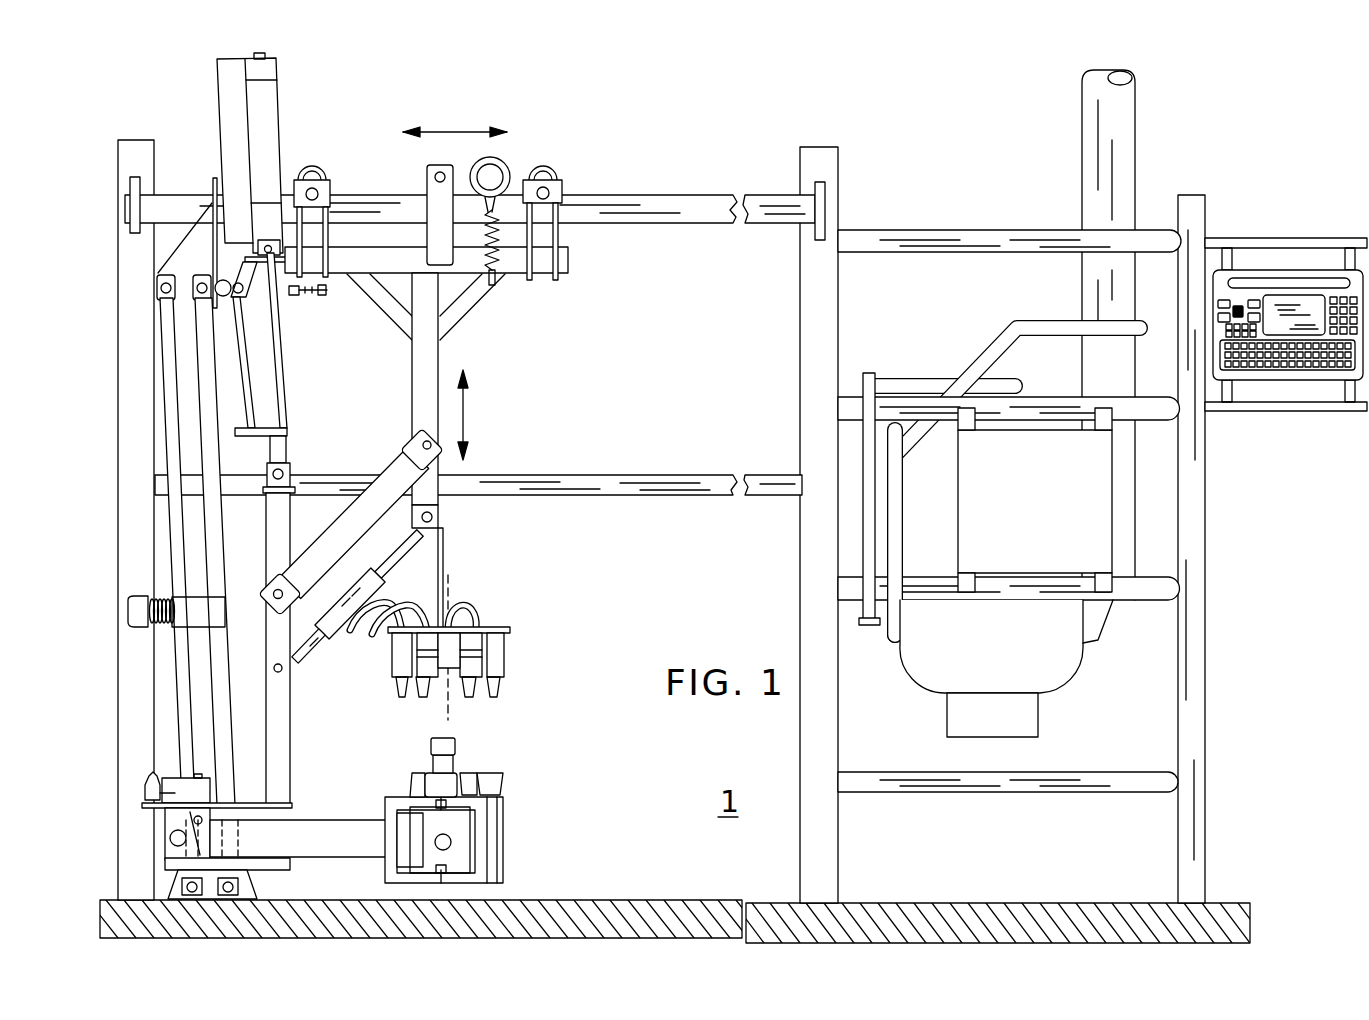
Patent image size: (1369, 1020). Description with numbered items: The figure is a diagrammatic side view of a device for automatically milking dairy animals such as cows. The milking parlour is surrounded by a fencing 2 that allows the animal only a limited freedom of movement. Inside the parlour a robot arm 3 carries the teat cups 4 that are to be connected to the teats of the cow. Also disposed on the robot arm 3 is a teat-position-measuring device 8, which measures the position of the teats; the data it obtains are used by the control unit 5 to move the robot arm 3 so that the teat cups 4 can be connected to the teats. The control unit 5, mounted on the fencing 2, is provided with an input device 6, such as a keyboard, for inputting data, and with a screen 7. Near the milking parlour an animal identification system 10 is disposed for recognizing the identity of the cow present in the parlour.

The fencing 2 is at (650, 192).
The robot arm 3 is at (373, 843).
The teat cups 4 is at (490, 782).
The control unit 5 is at (1219, 281).
The input device 6 is at (1285, 360).
The screen 7 is at (1311, 313).
The teat-position-measuring device 8 is at (443, 746).
The animal identification system 10 is at (1025, 720).